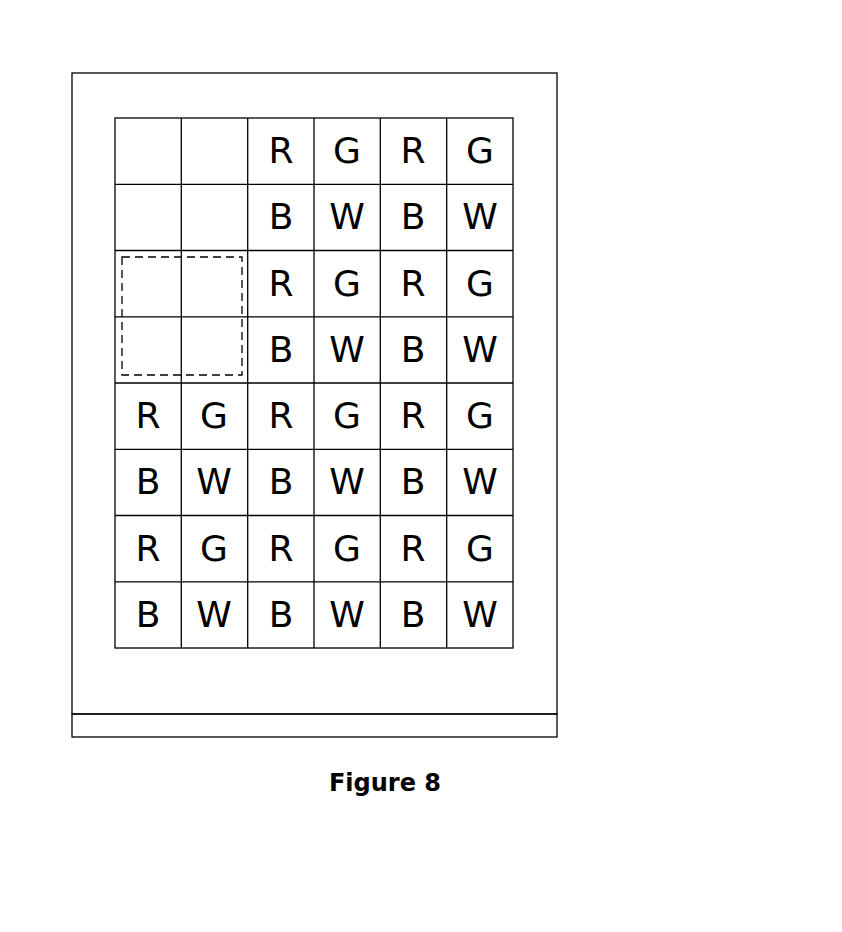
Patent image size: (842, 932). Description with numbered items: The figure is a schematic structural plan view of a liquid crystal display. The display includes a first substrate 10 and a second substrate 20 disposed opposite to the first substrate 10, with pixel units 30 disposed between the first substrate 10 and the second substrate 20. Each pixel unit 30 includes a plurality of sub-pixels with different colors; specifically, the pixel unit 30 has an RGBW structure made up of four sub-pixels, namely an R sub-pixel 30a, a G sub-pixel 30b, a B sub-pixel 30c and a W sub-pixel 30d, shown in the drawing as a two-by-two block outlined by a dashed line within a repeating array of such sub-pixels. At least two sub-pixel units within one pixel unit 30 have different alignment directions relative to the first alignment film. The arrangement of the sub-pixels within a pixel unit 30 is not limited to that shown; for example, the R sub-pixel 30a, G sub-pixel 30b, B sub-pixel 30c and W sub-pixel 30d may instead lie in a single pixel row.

The first substrate 10 is at (557, 723).
The second substrate 20 is at (558, 193).
The pixel unit 30 is at (118, 313).
The R sub-pixel 30a is at (149, 135).
The G sub-pixel 30b is at (212, 135).
The B sub-pixel 30c is at (146, 194).
The W sub-pixel 30d is at (190, 230).